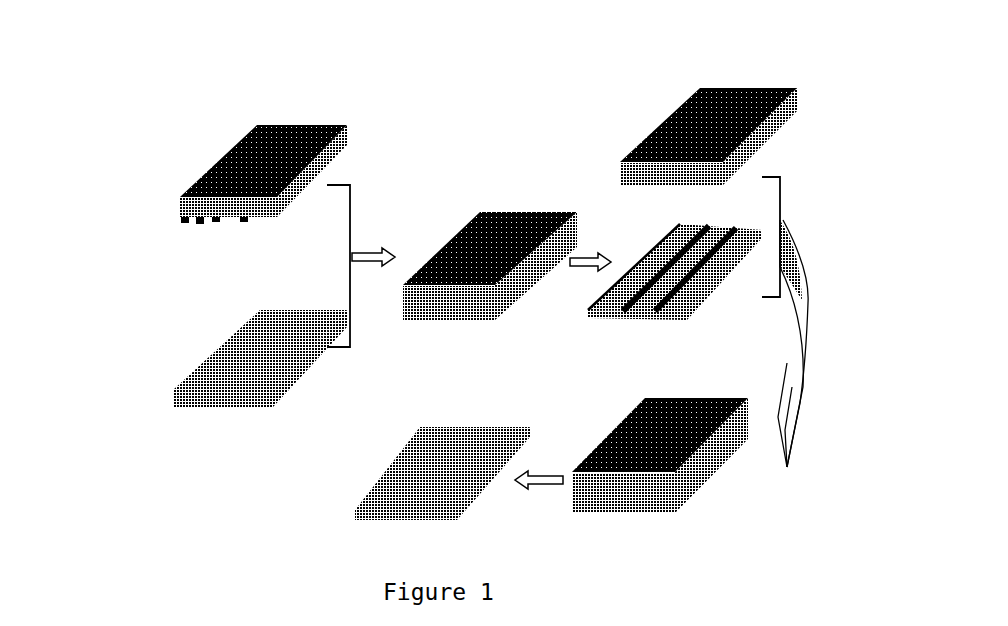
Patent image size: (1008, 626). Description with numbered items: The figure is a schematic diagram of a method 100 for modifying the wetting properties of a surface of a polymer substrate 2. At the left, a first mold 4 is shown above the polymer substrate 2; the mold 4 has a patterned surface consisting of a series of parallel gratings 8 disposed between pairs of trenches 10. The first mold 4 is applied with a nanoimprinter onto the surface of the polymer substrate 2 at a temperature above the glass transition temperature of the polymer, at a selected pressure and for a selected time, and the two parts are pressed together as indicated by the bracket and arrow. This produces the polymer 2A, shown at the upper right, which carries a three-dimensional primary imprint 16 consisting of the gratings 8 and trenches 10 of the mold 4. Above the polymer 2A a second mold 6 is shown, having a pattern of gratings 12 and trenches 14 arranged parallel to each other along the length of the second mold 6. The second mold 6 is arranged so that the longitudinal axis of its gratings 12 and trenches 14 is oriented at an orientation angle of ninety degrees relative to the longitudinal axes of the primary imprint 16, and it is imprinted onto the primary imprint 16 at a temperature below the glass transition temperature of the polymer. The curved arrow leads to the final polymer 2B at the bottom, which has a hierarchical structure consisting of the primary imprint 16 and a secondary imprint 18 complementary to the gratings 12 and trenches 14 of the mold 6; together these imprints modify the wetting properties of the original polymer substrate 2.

The method 100 is at (160, 472).
The polymer substrate 2 is at (172, 397).
The first mold 4 is at (210, 170).
The gratings 8 is at (183, 219).
The trenches 10 is at (200, 221).
The second mold 6 is at (767, 122).
The trenches 14 is at (759, 151).
The gratings 12 is at (722, 180).
The polymer 2A is at (596, 322).
The primary imprint 16 is at (703, 293).
The secondary imprint 18 is at (392, 480).
The polymer 2B is at (354, 508).